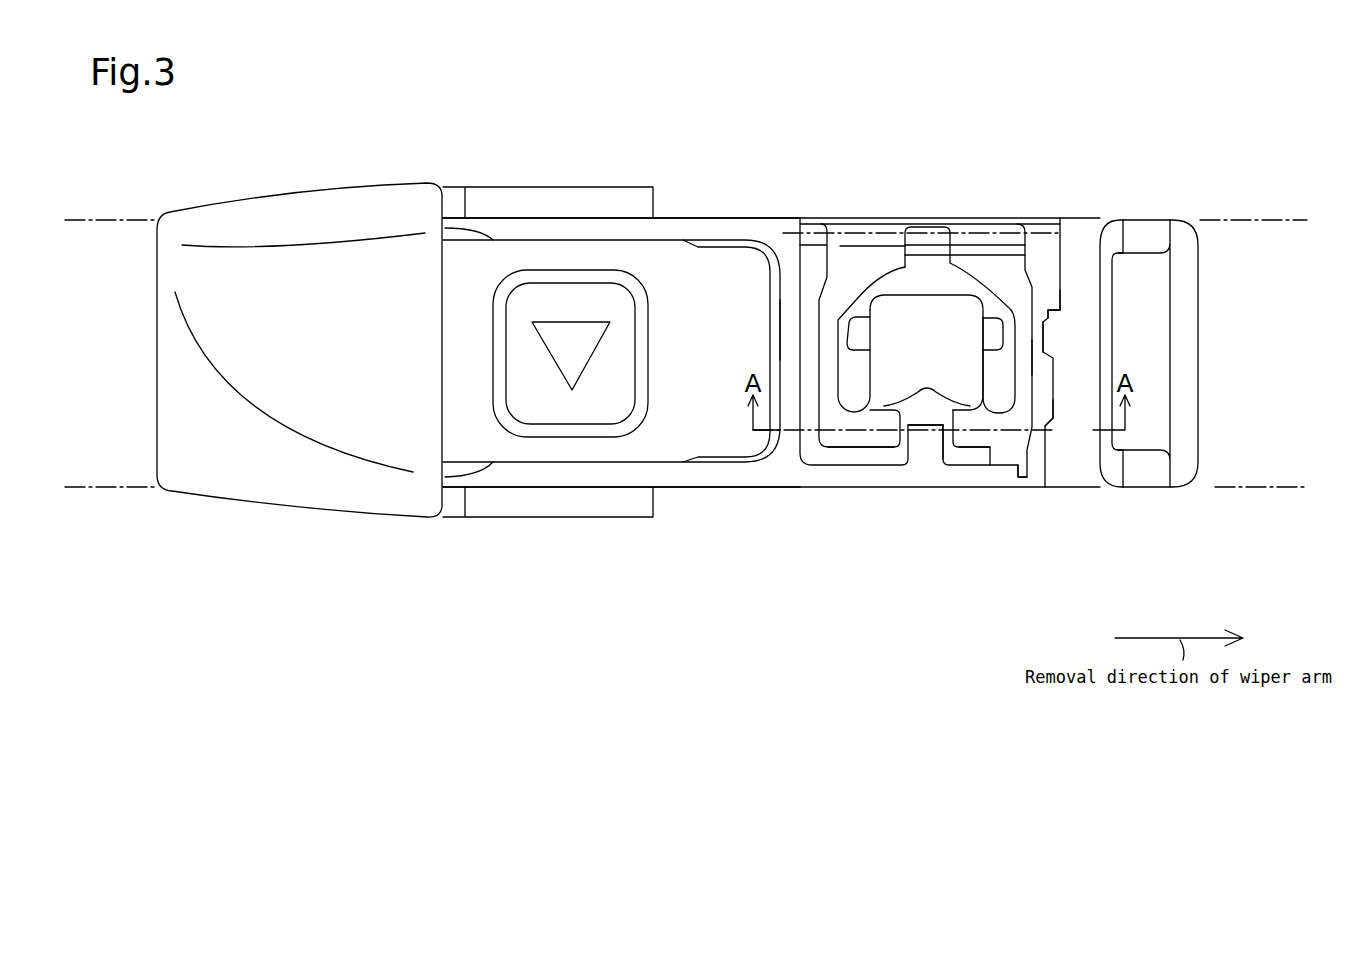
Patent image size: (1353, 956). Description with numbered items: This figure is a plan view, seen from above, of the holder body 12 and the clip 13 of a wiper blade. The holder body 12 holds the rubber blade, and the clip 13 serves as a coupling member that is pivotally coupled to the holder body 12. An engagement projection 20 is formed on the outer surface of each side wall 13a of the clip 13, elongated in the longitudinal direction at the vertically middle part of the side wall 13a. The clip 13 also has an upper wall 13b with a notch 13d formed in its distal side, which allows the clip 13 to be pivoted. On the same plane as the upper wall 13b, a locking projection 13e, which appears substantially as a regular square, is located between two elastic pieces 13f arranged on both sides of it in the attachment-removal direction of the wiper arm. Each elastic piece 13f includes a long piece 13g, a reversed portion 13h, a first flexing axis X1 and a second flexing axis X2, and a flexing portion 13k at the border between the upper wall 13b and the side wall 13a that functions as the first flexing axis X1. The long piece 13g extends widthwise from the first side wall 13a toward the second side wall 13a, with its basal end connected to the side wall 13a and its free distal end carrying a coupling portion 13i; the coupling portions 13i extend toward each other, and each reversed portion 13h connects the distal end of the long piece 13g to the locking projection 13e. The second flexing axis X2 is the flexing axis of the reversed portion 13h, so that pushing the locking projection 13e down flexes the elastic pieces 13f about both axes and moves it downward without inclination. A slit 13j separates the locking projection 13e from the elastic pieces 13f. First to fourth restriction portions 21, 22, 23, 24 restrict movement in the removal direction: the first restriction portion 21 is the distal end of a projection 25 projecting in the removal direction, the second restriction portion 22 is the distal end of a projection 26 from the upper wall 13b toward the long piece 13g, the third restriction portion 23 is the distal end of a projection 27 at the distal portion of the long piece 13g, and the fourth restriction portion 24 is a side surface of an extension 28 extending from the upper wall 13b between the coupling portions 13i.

The holder body 12 is at (372, 185).
The engagement projection 20 is at (556, 186).
The clip 13 is at (695, 218).
The side wall 13a is at (750, 218).
The upper wall 13b is at (1080, 313).
The notch 13d is at (778, 325).
The locking projection 13e is at (921, 303).
The elastic piece 13f is at (815, 352).
The long piece 13g is at (823, 323).
The reversed portion 13h is at (927, 380).
The coupling portion 13i is at (843, 440).
The slit 13j is at (843, 320).
The flexing portion 13k is at (987, 243).
The first restriction portion 21 is at (1002, 332).
The second restriction portion 22 is at (1045, 336).
The third restriction portion 23 is at (1052, 422).
The fourth restriction portion 24 is at (912, 437).
The projection 25 is at (983, 335).
The projection 26 is at (1058, 310).
The projection 27 is at (1056, 437).
The extension 28 is at (943, 437).
The first flexing axis X1 is at (868, 235).
The second flexing axis X2 is at (876, 427).